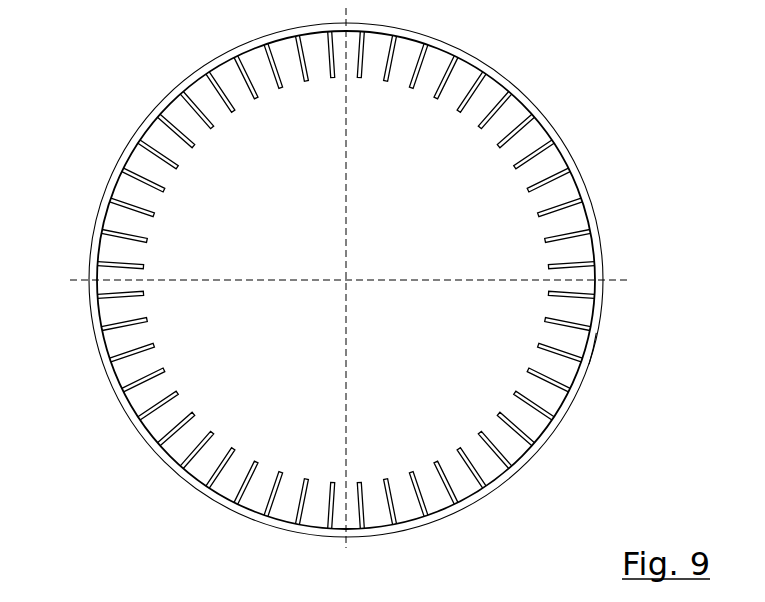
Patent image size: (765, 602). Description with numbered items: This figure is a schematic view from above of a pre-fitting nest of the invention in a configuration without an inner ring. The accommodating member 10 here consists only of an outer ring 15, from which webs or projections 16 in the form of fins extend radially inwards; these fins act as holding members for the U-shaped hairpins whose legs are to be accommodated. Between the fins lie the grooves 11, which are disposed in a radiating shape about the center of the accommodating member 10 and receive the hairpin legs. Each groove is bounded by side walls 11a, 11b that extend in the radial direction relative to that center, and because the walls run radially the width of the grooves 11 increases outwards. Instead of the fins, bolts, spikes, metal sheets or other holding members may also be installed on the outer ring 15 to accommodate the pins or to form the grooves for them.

The accommodating member 10 is at (90, 123).
The grooves 11 is at (582, 221).
The side wall 11a is at (598, 355).
The side wall 11b is at (518, 327).
The outer ring 15 is at (355, 280).
The webs or projections 16 is at (470, 139).